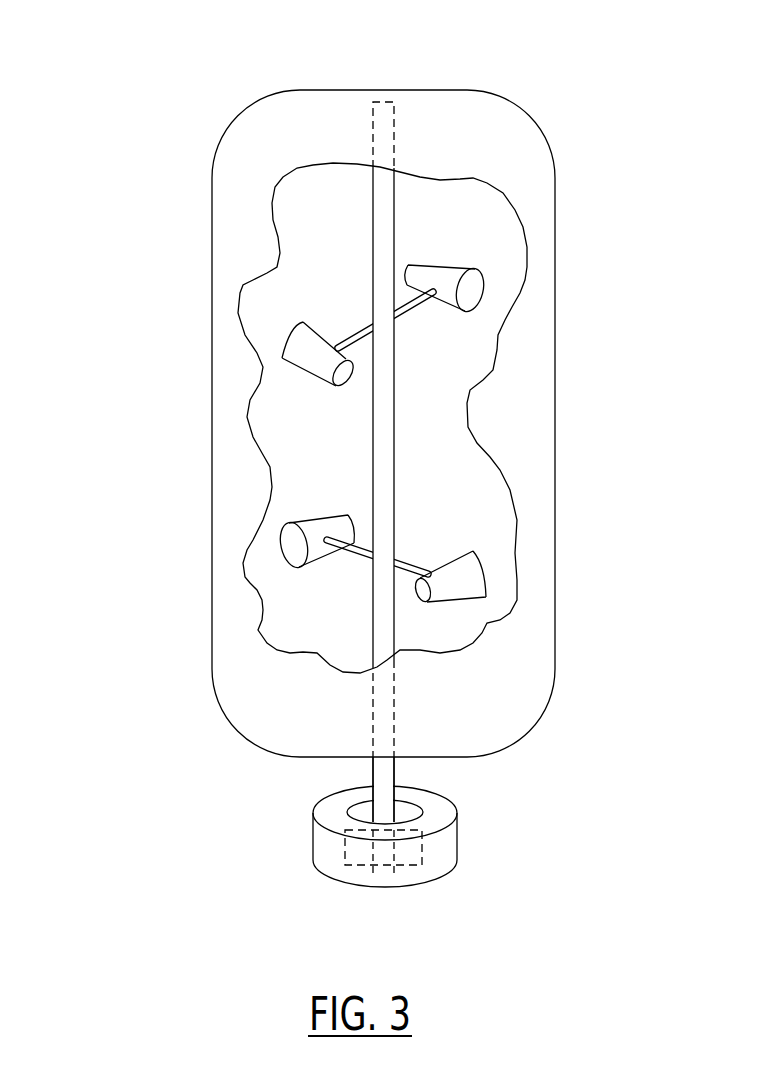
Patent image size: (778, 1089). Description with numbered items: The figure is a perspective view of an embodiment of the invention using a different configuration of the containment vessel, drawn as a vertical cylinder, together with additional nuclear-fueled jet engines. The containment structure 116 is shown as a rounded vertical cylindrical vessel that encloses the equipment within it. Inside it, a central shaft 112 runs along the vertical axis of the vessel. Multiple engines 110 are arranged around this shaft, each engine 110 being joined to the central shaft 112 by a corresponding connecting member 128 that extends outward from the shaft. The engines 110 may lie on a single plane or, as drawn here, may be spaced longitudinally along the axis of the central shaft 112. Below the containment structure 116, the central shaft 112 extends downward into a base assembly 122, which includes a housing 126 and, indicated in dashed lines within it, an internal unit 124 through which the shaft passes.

The engine 110 is at (312, 297).
The central shaft 112 is at (370, 207).
The container 116 is at (520, 107).
The base assembly 122 is at (313, 847).
The motor 124 is at (418, 845).
The housing 126 is at (312, 850).
The connecting member 128 is at (353, 348).